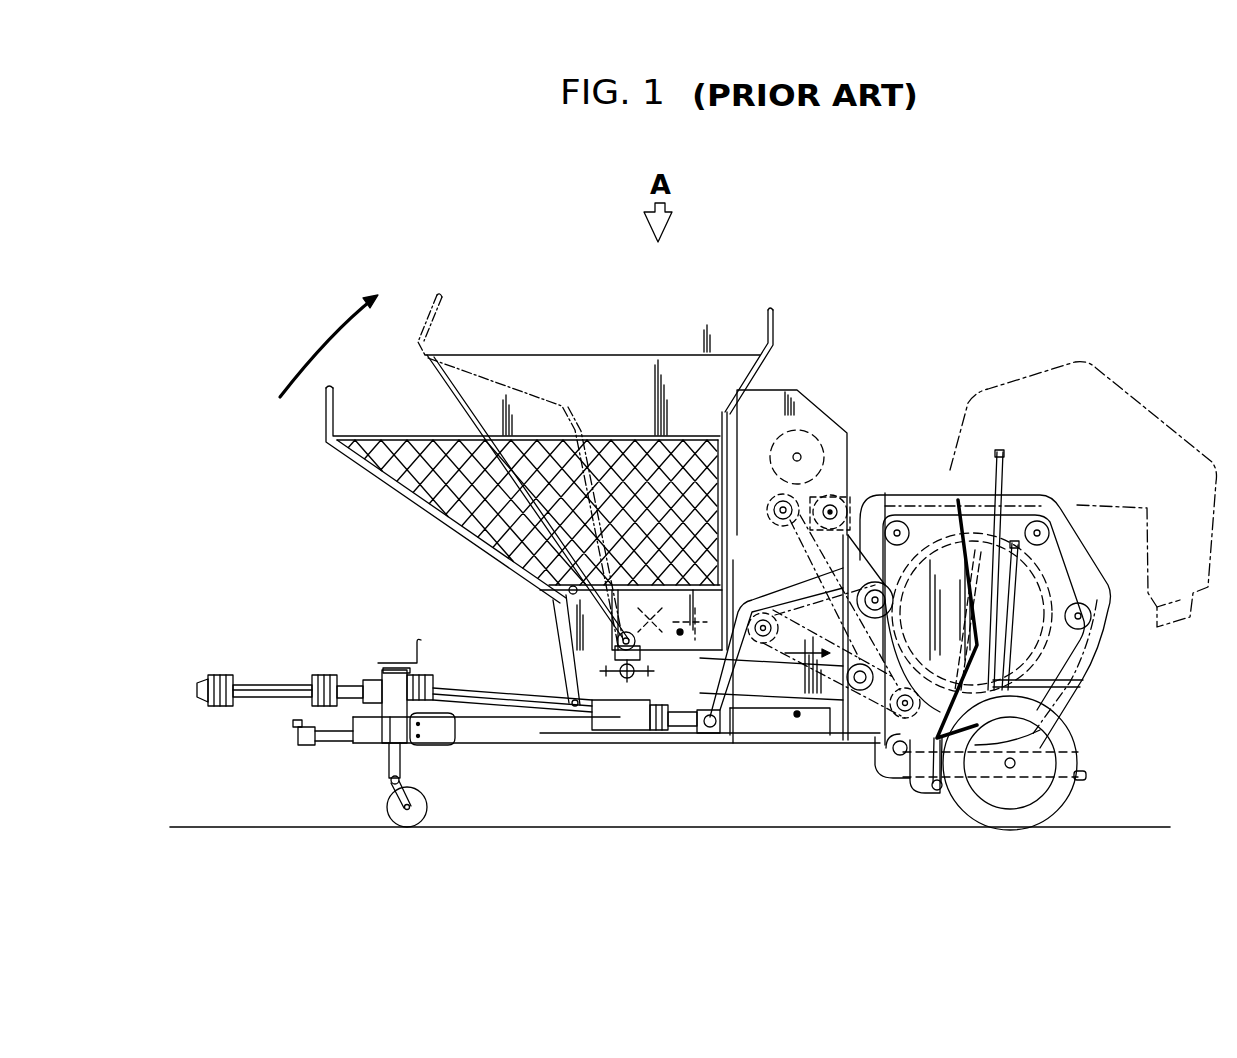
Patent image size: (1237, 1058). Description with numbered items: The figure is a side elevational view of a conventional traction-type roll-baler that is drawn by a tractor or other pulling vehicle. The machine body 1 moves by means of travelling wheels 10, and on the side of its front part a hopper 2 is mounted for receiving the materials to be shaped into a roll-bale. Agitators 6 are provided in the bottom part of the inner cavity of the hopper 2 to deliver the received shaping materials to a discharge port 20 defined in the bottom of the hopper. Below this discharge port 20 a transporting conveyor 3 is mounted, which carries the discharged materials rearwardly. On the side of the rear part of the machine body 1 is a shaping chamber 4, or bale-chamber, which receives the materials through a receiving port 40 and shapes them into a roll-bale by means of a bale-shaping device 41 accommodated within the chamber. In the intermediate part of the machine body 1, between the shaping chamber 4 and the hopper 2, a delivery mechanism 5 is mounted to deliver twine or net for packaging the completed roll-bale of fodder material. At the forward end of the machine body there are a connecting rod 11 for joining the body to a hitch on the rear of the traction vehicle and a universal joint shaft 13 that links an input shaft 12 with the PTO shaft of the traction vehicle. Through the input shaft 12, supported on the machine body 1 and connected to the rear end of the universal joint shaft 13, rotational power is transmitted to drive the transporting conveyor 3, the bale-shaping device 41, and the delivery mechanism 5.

The machine body 1 is at (566, 743).
The hopper 2 is at (553, 356).
The transporting conveyor 3 is at (658, 690).
The shaping chamber 4 is at (1021, 494).
The delivery mechanism 5 is at (820, 442).
The agitator 6 is at (750, 500).
The travelling wheel 10 is at (1057, 792).
The connecting rod 11 is at (362, 735).
The input shaft 12 is at (490, 702).
The universal joint shaft 13 is at (258, 680).
The discharge port 20 is at (680, 635).
The receiving port 40 is at (916, 690).
The bale-shaping device 41 is at (1088, 620).